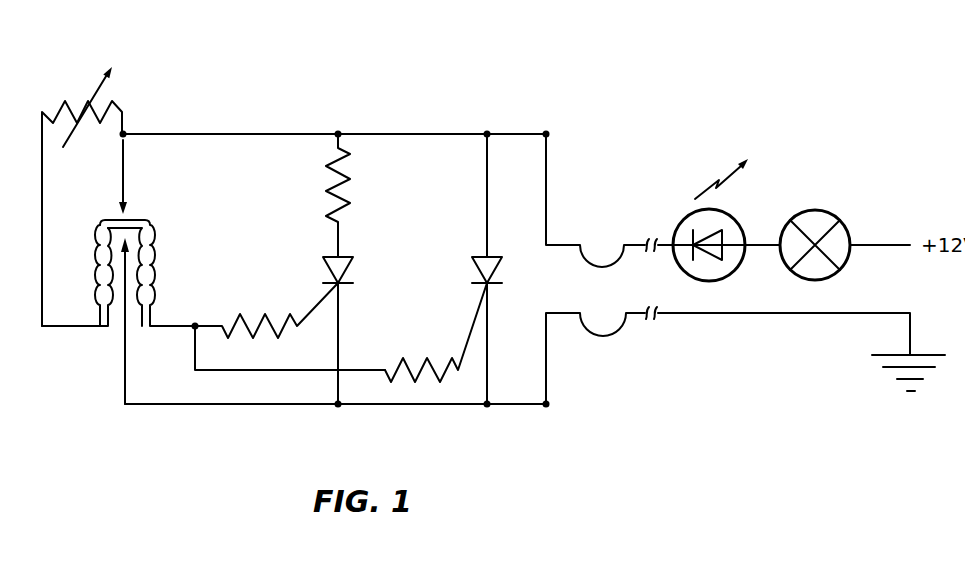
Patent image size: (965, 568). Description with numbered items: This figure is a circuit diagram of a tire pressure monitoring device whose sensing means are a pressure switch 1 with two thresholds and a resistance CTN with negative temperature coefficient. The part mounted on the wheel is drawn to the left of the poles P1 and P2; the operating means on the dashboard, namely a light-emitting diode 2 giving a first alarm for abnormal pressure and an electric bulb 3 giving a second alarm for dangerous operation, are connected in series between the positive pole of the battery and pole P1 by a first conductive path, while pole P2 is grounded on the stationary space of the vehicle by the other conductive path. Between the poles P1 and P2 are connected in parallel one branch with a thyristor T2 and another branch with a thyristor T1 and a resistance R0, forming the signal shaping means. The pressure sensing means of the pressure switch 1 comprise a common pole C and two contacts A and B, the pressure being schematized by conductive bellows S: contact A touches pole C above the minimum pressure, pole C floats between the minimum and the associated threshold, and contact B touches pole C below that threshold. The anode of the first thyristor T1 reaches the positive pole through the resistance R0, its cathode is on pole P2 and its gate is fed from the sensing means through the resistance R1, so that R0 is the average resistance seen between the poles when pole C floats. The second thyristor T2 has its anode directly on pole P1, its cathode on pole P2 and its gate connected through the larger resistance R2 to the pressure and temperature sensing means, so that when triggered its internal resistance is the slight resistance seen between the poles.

The pressure switch 1 is at (97, 335).
The light-emitting diode 2 is at (677, 264).
The electric bulb 3 is at (840, 258).
The resistance with negative temperature coefficient CTN is at (69, 104).
The resistance R0 is at (348, 186).
The resistance R1 is at (255, 316).
The resistance R2 is at (416, 358).
The first thyristor T1 is at (352, 262).
The second thyristor T2 is at (496, 257).
The pole P1 is at (545, 130).
The pole P2 is at (549, 406).
The contact A is at (106, 250).
The contact B is at (133, 177).
The common pole C is at (169, 228).
The bellows S is at (97, 271).